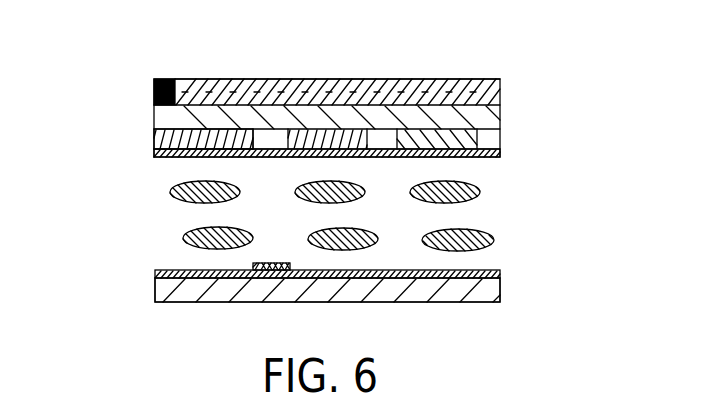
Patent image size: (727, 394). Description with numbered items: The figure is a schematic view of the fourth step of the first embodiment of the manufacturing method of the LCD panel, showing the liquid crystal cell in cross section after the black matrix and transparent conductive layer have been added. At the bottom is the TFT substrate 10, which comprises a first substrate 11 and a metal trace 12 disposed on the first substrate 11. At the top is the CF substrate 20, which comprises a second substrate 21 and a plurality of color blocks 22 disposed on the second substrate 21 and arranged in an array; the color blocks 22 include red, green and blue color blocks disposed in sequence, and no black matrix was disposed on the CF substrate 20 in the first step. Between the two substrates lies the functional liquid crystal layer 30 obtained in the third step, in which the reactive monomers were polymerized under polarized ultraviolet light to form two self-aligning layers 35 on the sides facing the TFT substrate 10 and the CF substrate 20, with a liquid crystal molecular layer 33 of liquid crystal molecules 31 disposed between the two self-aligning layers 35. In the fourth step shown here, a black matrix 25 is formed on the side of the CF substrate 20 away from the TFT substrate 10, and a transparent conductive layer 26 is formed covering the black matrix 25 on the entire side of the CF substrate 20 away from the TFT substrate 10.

The TFT substrate 10 is at (343, 306).
The first substrate 11 is at (207, 293).
The metal trace 12 is at (253, 269).
The CF substrate 20 is at (340, 100).
The second substrate 21 is at (175, 142).
The color blocks 22 is at (192, 141).
The black matrix 25 is at (270, 90).
The transparent conductive layer 26 is at (345, 90).
The functional liquid crystal layer 30 is at (362, 200).
The liquid crystal molecules 31 is at (185, 237).
The liquid crystal molecular layer 33 is at (473, 230).
The self-aligning layers 35 is at (500, 155).